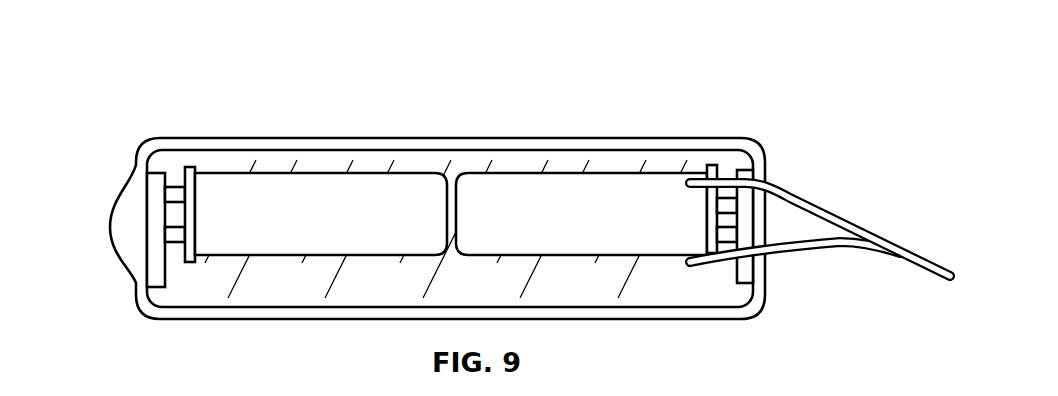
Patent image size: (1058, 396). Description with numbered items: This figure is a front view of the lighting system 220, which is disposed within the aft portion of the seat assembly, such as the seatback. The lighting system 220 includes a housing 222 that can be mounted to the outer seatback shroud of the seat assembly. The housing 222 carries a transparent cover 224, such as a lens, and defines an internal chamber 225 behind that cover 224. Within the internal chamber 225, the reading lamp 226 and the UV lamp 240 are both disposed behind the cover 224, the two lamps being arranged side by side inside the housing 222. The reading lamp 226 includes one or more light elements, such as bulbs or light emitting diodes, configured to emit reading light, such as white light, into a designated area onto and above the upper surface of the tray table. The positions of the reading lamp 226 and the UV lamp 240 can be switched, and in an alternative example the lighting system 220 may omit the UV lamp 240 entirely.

The lighting system 220 is at (138, 105).
The housing 222 is at (750, 140).
The transparent cover 224 is at (638, 165).
The internal chamber 225 is at (424, 157).
The reading lamp 226 is at (565, 161).
The UV lamp 240 is at (290, 160).